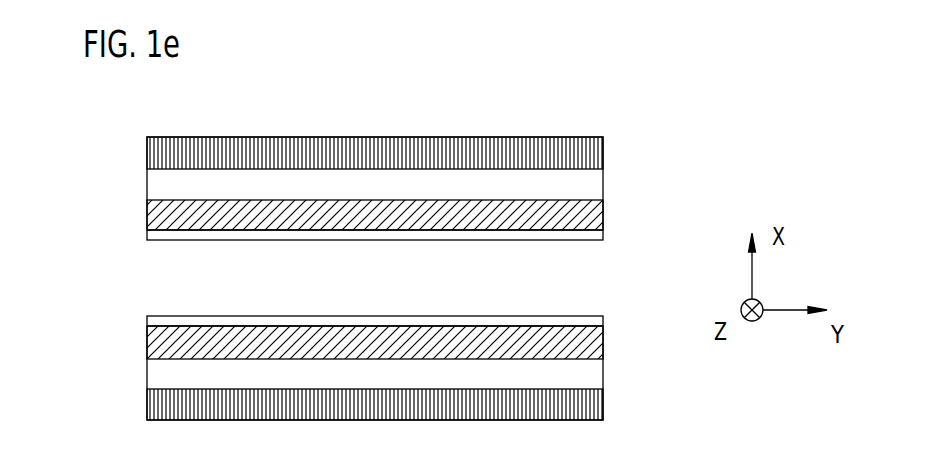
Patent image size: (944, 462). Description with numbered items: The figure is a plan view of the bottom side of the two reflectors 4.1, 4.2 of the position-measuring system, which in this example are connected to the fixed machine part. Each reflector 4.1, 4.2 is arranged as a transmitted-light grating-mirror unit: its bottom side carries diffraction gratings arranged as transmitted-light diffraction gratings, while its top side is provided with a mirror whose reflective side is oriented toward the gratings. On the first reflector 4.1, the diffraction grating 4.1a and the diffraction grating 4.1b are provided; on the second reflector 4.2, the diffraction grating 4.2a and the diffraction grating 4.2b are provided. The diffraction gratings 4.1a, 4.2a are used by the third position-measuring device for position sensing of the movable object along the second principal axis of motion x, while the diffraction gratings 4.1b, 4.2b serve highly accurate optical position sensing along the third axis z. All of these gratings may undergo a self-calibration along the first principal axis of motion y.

The reflector 4.1 is at (374, 188).
The diffraction grating 4.1a is at (164, 217).
The diffraction grating 4.1b is at (160, 155).
The reflector 4.2 is at (371, 371).
The diffraction grating 4.2a is at (160, 336).
The diffraction grating 4.2b is at (160, 402).